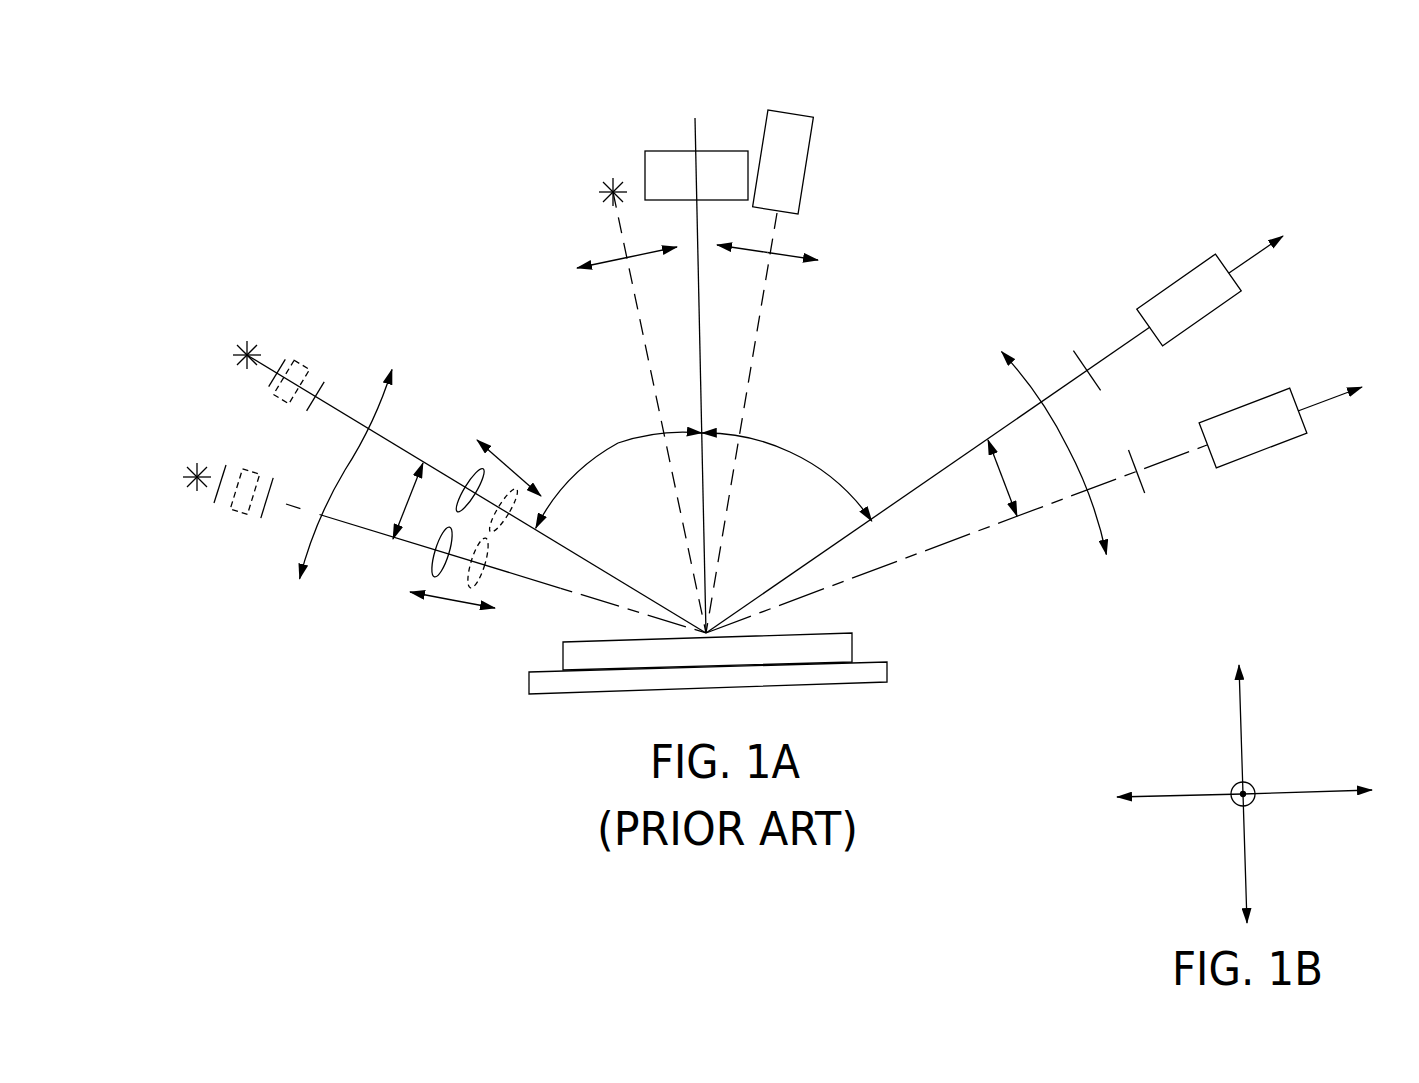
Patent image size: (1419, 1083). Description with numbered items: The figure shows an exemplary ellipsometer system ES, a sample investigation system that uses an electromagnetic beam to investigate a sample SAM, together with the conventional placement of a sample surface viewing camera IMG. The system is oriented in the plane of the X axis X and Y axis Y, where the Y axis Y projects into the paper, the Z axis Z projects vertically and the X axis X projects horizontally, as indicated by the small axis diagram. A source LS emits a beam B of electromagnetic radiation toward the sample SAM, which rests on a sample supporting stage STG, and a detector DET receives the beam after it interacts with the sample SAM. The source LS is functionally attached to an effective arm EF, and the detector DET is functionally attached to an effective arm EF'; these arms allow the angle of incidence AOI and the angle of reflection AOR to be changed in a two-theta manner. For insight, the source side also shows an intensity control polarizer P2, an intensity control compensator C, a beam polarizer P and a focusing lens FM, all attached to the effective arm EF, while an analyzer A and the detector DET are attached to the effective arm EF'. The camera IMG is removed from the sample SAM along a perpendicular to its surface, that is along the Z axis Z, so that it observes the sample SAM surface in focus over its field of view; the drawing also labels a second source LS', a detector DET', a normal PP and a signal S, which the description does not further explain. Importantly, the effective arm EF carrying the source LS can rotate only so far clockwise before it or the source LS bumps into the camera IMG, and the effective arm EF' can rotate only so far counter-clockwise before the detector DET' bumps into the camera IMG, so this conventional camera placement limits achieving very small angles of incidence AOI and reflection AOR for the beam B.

In FIG. 1A, the source LS is at (237, 338).
In FIG. 1A, the intensity control polarizer P2 is at (287, 340).
In FIG. 1A, the compensator C is at (307, 355).
In FIG. 1A, the beam polarizer P is at (330, 367).
In FIG. 1A, the electromagnetic beam B is at (343, 393).
In FIG. 1A, the effective arm EF is at (637, 348).
In FIG. 1A, the focusing lens FM is at (450, 613).
In FIG. 1A, the plane of incidence normal PP is at (715, 576).
In FIG. 1A, the angle of incidence AOI is at (618, 445).
In FIG. 1A, the angle of reflection AOR is at (795, 437).
In FIG. 1A, the normal incidence light source LS' is at (609, 389).
In FIG. 1A, the camera IMG is at (668, 148).
In FIG. 1A, the detector DET' is at (816, 360).
In FIG. 1A, the effective arm EF' is at (867, 380).
In FIG. 1A, the ellipsometer system ES is at (1040, 97).
In FIG. 1A, the analyzer A is at (1072, 347).
In FIG. 1A, the detector DET is at (1222, 361).
In FIG. 1A, the signal output S is at (1275, 230).
In FIG. 1A, the sample SAM is at (707, 651).
In FIG. 1A, the stage STG is at (898, 665).
In FIG. 1B, the X axis X is at (1244, 775).
In FIG. 1B, the Y axis Y is at (1255, 805).
In FIG. 1B, the Z axis Z is at (1227, 794).